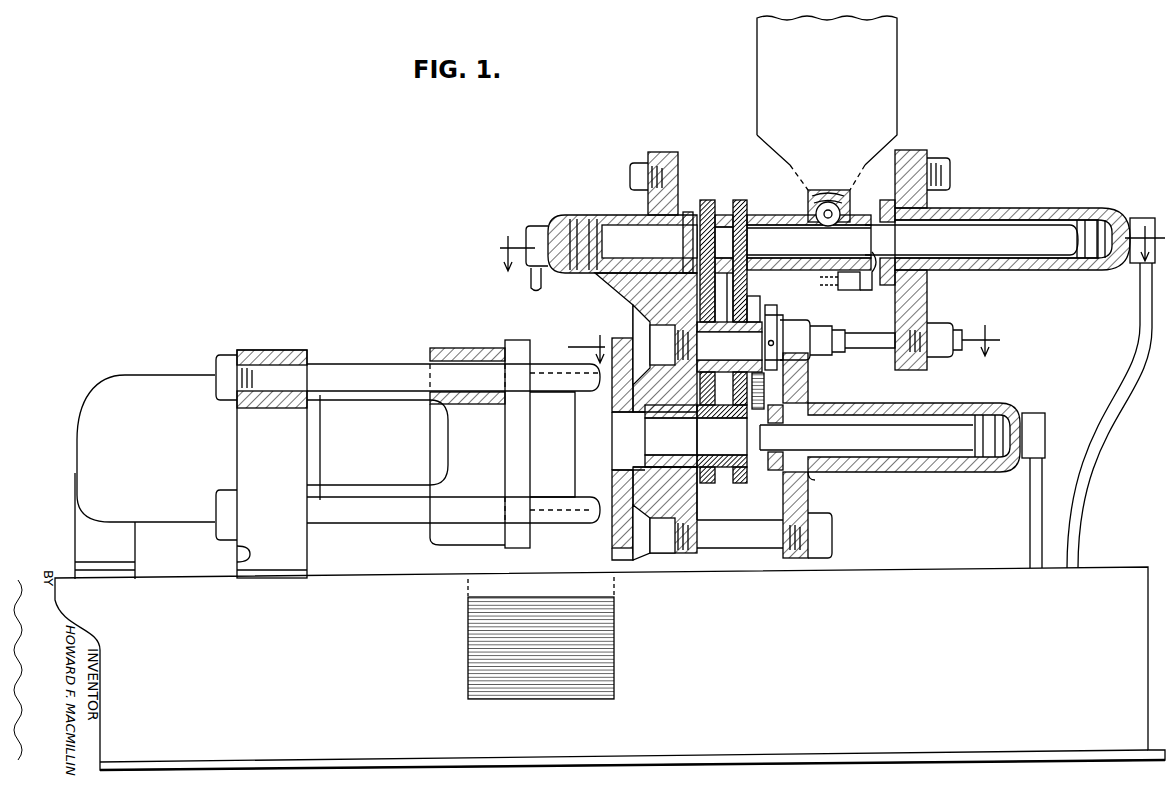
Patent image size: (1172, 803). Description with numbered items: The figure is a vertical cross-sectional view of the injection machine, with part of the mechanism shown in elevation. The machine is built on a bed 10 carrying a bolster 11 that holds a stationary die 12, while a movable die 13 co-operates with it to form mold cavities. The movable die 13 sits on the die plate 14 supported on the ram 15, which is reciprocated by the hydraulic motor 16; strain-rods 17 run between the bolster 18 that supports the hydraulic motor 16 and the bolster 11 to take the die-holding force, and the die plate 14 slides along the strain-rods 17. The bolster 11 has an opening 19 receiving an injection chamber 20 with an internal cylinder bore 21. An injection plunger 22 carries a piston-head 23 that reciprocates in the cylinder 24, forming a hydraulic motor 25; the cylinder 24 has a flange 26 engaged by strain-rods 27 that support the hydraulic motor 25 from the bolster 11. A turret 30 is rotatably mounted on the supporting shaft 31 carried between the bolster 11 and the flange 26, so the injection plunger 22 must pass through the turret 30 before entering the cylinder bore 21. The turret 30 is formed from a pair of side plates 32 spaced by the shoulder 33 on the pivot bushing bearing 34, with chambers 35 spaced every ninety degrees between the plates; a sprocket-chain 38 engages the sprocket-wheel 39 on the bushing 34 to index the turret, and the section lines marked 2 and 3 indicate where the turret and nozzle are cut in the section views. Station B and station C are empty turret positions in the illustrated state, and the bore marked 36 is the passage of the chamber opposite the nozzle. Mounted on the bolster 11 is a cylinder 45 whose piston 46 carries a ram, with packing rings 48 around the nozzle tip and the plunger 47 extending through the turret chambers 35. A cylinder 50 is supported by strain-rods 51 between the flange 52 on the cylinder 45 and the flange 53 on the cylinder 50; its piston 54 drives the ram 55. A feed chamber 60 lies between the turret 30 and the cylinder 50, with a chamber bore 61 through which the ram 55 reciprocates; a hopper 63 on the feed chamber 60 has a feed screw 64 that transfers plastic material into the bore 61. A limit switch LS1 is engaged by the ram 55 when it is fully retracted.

The bed 10 is at (726, 651).
The bolster 11 is at (655, 475).
The stationary die 12 is at (602, 483).
The movable die 13 is at (560, 477).
The die plate 14 is at (455, 348).
The ram 15 is at (360, 450).
The hydraulic motor 16 is at (158, 452).
The strain-rods 17 is at (398, 365).
The bolster 18 is at (276, 455).
The opening 19 is at (690, 500).
The injection chamber 20 is at (612, 449).
The cylinder bore 21 is at (671, 442).
The injection plunger 22 is at (902, 446).
The piston-head 23 is at (995, 462).
The cylinder 24 is at (912, 408).
The hydraulic motor 25 is at (1022, 414).
The flange 26 is at (805, 385).
The strain-rods 27 is at (762, 535).
The turret 30 is at (747, 272).
The supporting shaft 31 is at (756, 337).
The side plates 32 is at (690, 212).
The shoulder 33 is at (747, 296).
The pivot bushing bearing 34 is at (729, 347).
The chambers 35 is at (718, 225).
The bore 36 is at (727, 242).
The sprocket-chain 38 is at (766, 400).
The sprocket-wheel 39 is at (760, 305).
The cylinder 45 is at (582, 272).
The piston 46 is at (580, 228).
The plunger 47 is at (615, 232).
The packing rings 48 is at (582, 226).
The cylinder 50 is at (1045, 208).
The strain-rods 51 is at (868, 168).
The flange 52 is at (660, 152).
The flange 53 is at (918, 152).
The piston 54 is at (1095, 212).
The ram 55 is at (1005, 250).
The feed chamber 60 is at (770, 226).
The chamber bore 61 is at (793, 235).
The hopper 63 is at (845, 88).
The feed screw 64 is at (828, 196).
The section line 2- 2 is at (784, 343).
The section line 3- 3 is at (832, 248).
The station B is at (722, 436).
The station C is at (710, 247).
The limit switch LS1 is at (848, 280).